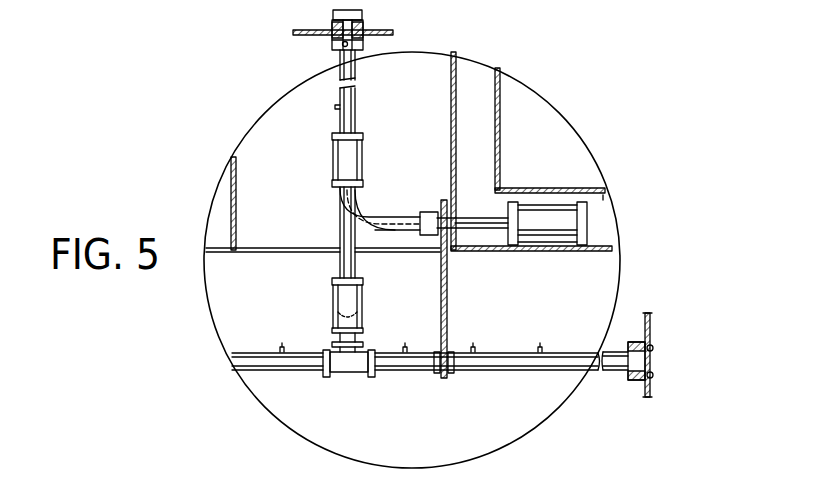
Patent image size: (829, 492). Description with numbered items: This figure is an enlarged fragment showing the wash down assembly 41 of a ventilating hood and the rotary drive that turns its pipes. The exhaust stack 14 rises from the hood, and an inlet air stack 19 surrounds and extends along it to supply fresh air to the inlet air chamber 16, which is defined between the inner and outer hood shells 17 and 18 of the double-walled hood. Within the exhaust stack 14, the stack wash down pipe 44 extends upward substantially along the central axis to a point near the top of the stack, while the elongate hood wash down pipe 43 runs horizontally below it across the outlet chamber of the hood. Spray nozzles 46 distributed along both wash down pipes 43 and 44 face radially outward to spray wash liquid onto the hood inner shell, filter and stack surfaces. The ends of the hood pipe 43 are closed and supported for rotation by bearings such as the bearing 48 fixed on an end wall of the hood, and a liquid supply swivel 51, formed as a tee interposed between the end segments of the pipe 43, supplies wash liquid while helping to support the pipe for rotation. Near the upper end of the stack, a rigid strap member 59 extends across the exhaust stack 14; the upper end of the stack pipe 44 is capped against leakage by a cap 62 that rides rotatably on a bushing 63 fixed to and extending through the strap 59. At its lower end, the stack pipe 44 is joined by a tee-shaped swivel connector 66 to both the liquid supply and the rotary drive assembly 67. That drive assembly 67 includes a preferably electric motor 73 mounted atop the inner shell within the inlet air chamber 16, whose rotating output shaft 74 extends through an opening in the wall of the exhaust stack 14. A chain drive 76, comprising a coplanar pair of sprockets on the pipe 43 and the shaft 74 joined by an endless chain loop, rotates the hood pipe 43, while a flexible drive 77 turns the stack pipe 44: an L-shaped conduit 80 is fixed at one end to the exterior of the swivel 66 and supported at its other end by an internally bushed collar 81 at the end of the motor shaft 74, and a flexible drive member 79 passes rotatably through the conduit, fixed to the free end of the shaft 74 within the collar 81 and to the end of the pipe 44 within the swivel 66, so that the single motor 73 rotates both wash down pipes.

The exhaust stack 14 is at (456, 56).
The inlet air chamber 16 is at (604, 222).
The inner hood shell 17 is at (600, 188).
The outer hood shell 18 is at (610, 244).
The inlet air stack 19 is at (500, 86).
The wash down assembly 41 is at (308, 399).
The hood wash down pipe 43 is at (500, 360).
The stack wash down pipe 44 is at (348, 95).
The spray nozzles 46 is at (334, 108).
The bearing 48 is at (632, 345).
The liquid supply swivel 51 is at (349, 372).
The strap member 59 is at (393, 32).
The cap 62 is at (356, 17).
The bushing 63 is at (332, 22).
The swivel connector 66 is at (346, 163).
The rotary drive assembly 67 is at (335, 44).
The motor 73 is at (543, 215).
The output shaft 74 is at (483, 228).
The chain drive 76 is at (447, 298).
The flexible drive 77 is at (386, 244).
The flexible drive member 79 is at (346, 201).
The L-shaped conduit 80 is at (348, 222).
The collar 81 is at (432, 218).